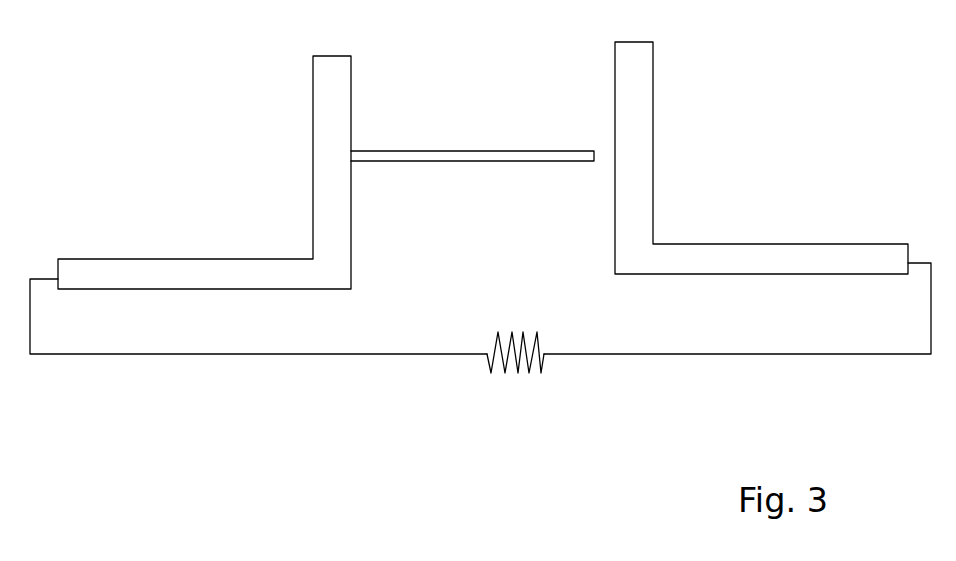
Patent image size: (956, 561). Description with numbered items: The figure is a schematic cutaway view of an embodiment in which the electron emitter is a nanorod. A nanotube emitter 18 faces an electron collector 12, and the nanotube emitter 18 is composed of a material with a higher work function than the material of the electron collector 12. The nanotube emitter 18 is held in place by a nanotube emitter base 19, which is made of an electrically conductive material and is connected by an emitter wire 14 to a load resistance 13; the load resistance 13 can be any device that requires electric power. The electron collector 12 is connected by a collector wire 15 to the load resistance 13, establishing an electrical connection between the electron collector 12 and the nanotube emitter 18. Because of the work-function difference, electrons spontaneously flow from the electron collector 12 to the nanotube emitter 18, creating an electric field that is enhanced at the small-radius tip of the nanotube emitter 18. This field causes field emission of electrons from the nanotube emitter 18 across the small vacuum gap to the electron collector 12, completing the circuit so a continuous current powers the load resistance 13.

The electron collector 12 is at (761, 158).
The load resistance 13 is at (512, 397).
The emitter wire 14 is at (258, 355).
The collector wire 15 is at (737, 356).
The nanotube emitter 18 is at (472, 111).
The nanotube emitter base 19 is at (204, 172).